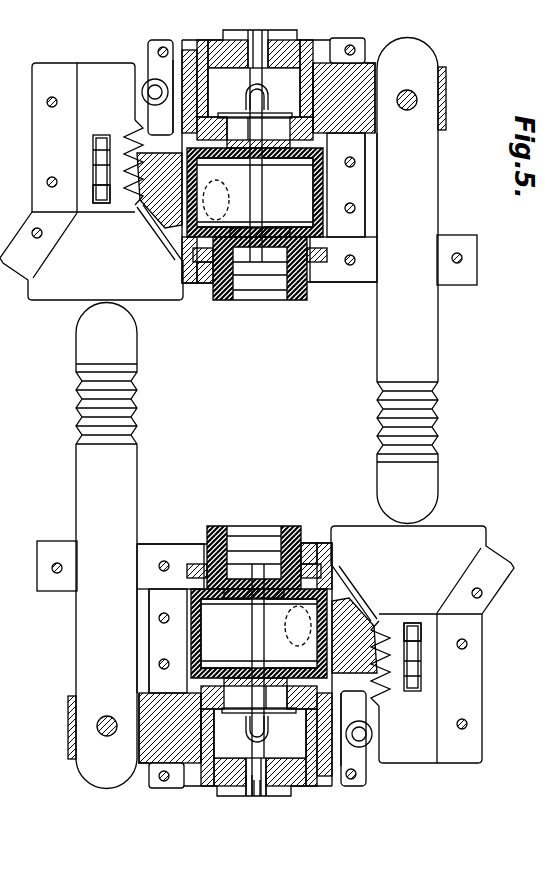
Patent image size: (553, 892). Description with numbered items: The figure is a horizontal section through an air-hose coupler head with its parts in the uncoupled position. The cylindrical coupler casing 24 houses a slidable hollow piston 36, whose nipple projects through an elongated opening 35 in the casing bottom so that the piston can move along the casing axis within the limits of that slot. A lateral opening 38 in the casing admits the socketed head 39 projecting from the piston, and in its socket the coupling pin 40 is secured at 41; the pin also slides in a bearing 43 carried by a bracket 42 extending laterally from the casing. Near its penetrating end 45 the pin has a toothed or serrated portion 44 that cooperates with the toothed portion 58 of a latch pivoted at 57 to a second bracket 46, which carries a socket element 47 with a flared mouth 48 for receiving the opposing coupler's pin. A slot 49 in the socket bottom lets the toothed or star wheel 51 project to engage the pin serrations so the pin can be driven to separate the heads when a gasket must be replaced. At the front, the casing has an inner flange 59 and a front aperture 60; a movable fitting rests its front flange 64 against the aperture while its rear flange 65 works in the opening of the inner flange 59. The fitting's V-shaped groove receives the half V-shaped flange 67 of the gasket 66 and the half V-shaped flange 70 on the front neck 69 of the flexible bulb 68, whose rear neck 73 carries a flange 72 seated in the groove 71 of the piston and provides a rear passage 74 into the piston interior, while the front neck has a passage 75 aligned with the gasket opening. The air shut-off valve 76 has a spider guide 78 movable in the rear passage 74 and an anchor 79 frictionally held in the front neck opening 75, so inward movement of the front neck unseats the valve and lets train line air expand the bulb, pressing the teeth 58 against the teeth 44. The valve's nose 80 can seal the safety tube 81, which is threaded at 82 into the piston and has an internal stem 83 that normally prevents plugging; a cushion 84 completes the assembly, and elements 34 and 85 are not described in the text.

The coupler casing 24 is at (195, 283).
The housing wall 34 is at (318, 100).
The elongated opening 35 is at (218, 92).
The slidable hollow piston 36 is at (303, 68).
The lateral opening 38 is at (377, 157).
The socketed head 39 is at (446, 95).
The coupling pin 40 is at (438, 187).
The securing point 41 is at (417, 98).
The bracket 42 is at (365, 283).
The bearing 43 is at (440, 286).
The toothed or serrated portion 44 is at (377, 420).
The penetrating end 45 is at (432, 487).
The bracket 46 is at (148, 62).
The socket element 47 is at (75, 137).
The flared mouth 48 is at (91, 252).
The slot 49 is at (90, 176).
The toothed or star wheel 51 is at (103, 196).
The pivot 57 is at (148, 86).
The toothed portion 58 is at (131, 210).
The inner flange 59 is at (346, 186).
The front aperture 60 is at (303, 262).
The front flange 64 is at (318, 262).
The rear flange 65 is at (302, 192).
The gasket 66 is at (256, 300).
The half V-shaped flange 67 is at (260, 288).
The bulb 68 is at (255, 192).
The front neck 69 is at (260, 263).
The half V-shaped flange 70 is at (260, 263).
The groove 71 is at (216, 200).
The flange 72 is at (222, 171).
The rear neck 73 is at (288, 173).
The rear passage 74 is at (238, 148).
The passage 75 is at (288, 212).
The air shut-off valve 76 is at (296, 92).
The spider guide 78 is at (255, 165).
The anchor 79 is at (224, 215).
The nose 80 is at (255, 101).
The safety tube 81 is at (264, 794).
The threaded portion 82 is at (254, 92).
The internal stem 83 is at (250, 792).
The cushion 84 is at (268, 790).
The stem bore 85 is at (257, 798).